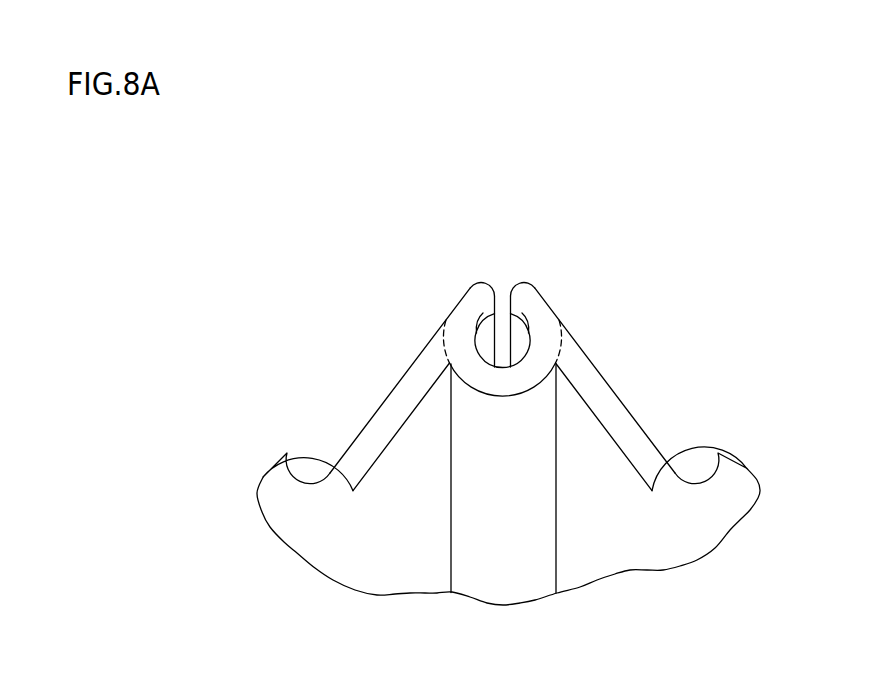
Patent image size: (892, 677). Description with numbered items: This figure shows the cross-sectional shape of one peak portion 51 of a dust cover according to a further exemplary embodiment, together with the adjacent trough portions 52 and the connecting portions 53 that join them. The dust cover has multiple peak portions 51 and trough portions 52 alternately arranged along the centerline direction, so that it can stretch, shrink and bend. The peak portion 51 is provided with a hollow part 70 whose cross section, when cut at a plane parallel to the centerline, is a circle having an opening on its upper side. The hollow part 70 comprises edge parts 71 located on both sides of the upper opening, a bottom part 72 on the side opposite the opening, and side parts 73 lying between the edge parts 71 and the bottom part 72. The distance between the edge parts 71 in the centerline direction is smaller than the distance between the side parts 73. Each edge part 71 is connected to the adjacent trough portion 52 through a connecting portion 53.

The peak portion 51 is at (573, 252).
The trough portion 52 is at (317, 457).
The connecting portion 53 is at (384, 400).
The hollow part 70 is at (502, 287).
The edge part 71 is at (478, 283).
The bottom part 72 is at (499, 397).
The side part 73 is at (480, 314).